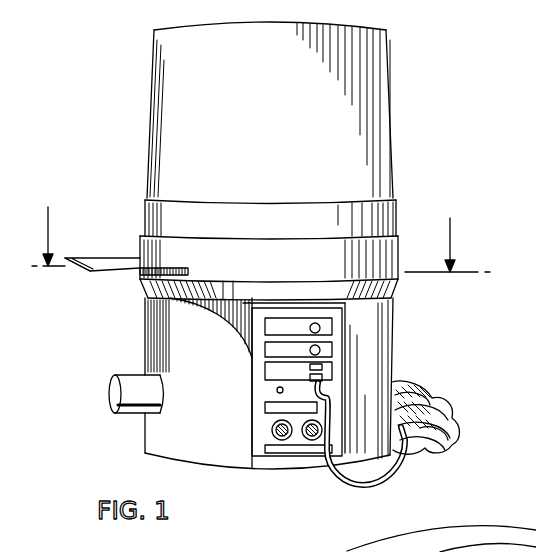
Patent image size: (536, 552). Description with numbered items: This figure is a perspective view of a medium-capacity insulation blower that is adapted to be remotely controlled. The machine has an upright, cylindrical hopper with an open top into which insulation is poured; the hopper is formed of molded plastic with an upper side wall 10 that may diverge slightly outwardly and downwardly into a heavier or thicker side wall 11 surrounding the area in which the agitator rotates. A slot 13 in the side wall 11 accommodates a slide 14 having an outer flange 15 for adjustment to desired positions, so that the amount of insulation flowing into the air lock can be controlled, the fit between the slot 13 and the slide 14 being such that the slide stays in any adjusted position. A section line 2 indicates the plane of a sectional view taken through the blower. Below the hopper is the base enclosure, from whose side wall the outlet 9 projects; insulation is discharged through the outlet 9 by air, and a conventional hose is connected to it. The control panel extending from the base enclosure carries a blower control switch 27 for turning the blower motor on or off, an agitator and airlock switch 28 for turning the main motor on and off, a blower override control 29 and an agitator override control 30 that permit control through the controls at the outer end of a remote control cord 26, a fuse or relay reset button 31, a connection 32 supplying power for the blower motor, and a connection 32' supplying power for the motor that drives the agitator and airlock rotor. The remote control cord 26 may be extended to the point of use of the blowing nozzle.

The section line 2 is at (258, 233).
The outlet 9 is at (127, 375).
The upper side wall 10 is at (393, 106).
The side wall 11 is at (396, 212).
The slot 13 is at (160, 266).
The slide 14 is at (115, 259).
The outer flange 15 is at (87, 273).
The remote control cord 26 is at (400, 470).
The blower control switch 27 is at (320, 327).
The agitator and airlock switch 28 is at (320, 349).
The blower override control 29 is at (322, 366).
The agitator override control 30 is at (322, 378).
The fuse or relay reset button 31 is at (277, 390).
The connection 32 is at (302, 470).
The connection 32' is at (253, 426).